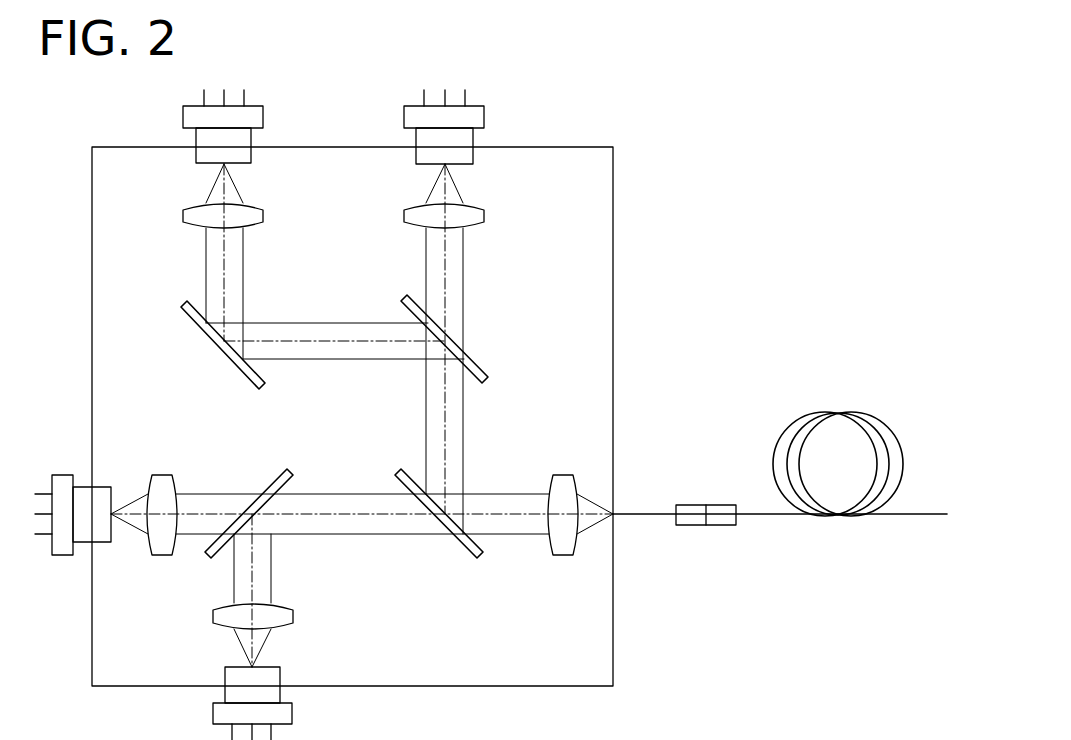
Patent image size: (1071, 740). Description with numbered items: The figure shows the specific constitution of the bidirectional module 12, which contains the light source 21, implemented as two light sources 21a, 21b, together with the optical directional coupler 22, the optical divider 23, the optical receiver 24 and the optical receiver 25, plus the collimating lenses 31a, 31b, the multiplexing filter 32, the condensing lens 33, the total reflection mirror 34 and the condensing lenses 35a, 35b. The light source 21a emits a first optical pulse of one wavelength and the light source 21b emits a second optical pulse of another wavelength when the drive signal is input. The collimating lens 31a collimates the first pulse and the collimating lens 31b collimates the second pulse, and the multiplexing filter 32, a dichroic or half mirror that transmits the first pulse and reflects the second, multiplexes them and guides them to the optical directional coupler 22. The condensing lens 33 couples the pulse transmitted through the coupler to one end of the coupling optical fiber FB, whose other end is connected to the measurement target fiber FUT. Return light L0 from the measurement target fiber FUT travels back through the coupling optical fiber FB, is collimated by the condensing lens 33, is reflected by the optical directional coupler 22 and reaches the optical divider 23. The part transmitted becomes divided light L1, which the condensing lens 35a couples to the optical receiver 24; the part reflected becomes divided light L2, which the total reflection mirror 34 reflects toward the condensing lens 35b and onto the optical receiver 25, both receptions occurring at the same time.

The bidirectional module 12 is at (558, 147).
The light source 21 is at (162, 559).
The light source 21a is at (63, 475).
The light source 21b is at (213, 712).
The optical directional coupler 22 is at (397, 470).
The optical divider 23 is at (402, 297).
The optical receiver 24 is at (404, 118).
The optical receiver 25 is at (183, 118).
The collimating lens 31a is at (163, 475).
The collimating lens 31b is at (213, 615).
The multiplexing filter 32 is at (288, 470).
The condensing lens 33 is at (563, 475).
The total reflection mirror 34 is at (182, 303).
The condensing lens 35a is at (404, 215).
The condensing lens 35b is at (183, 215).
The return light L0 is at (455, 433).
The divided light L1 is at (455, 287).
The divided light L2 is at (317, 331).
The coupling optical fiber FB is at (652, 512).
The measurement target fiber FUT is at (838, 445).